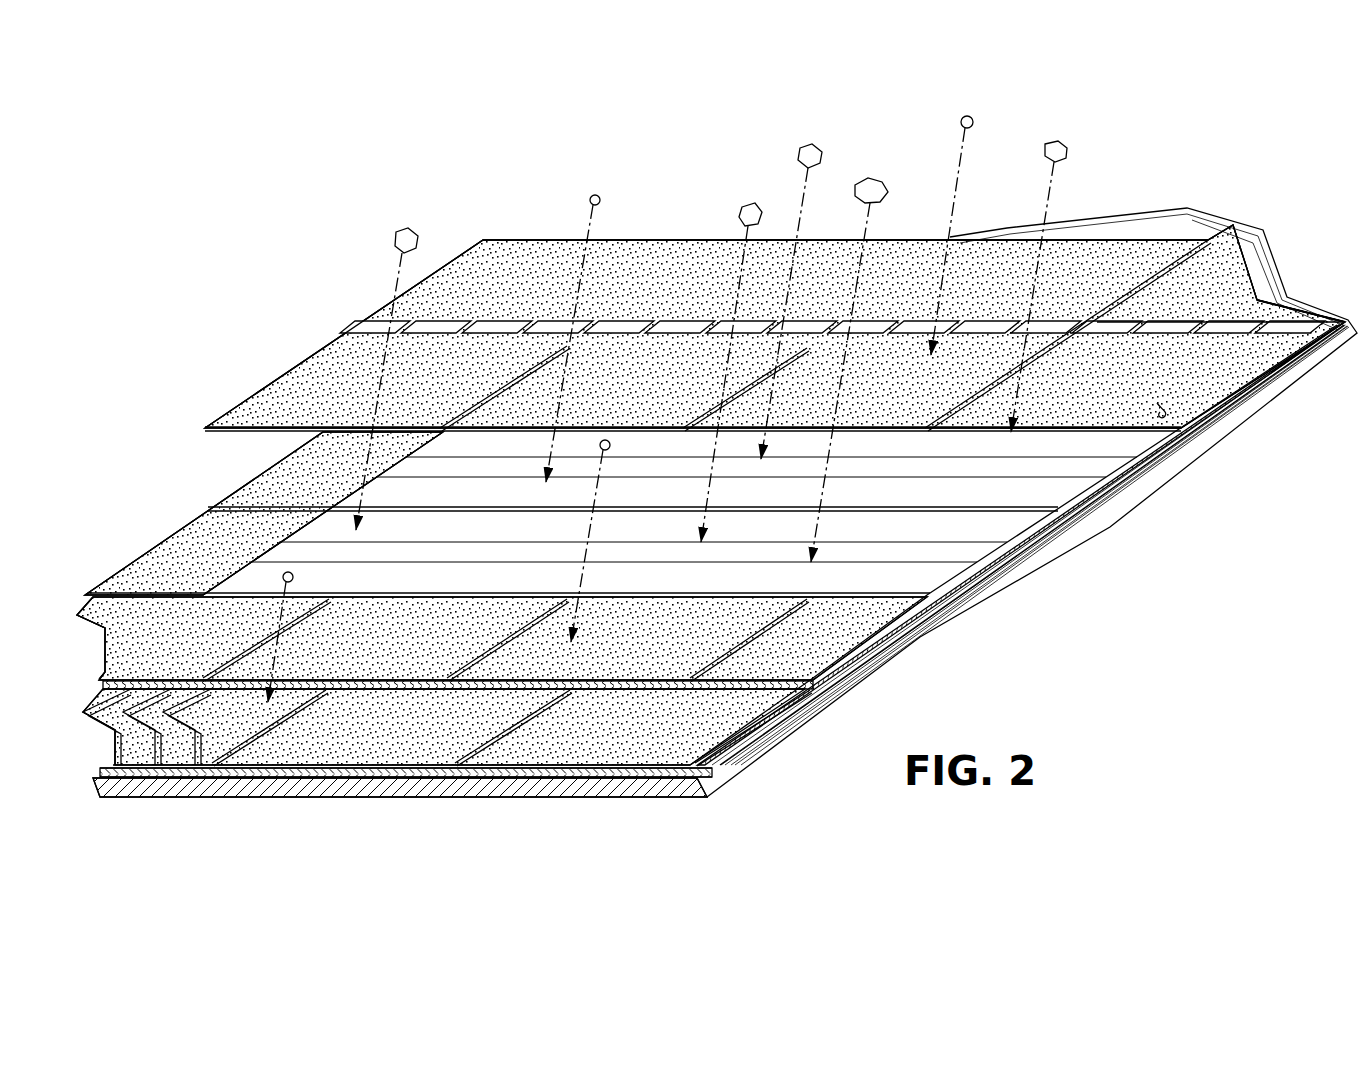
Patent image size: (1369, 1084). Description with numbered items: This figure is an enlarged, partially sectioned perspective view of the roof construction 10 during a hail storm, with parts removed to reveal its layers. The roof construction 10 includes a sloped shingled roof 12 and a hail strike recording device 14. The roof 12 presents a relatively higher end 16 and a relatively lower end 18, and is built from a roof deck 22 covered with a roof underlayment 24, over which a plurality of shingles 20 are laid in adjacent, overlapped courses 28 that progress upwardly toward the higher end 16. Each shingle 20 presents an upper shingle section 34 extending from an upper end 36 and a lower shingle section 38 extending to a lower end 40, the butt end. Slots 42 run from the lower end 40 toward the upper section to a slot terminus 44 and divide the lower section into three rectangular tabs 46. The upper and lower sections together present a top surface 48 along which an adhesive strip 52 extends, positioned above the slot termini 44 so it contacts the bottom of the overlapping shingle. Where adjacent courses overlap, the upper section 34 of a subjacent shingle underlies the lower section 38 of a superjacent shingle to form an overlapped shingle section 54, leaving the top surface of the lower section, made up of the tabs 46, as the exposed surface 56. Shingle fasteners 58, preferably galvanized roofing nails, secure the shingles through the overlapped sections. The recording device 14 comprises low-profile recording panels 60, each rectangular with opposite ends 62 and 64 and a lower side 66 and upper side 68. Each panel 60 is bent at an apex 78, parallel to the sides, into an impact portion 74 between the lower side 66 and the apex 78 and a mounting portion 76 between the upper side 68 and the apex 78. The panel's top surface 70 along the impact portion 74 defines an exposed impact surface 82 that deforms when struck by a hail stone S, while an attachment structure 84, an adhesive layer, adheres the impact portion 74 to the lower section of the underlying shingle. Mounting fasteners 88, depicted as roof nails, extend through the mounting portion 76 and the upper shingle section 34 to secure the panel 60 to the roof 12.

The roof construction 10 is at (220, 229).
The sloped shingled roof 12 is at (206, 320).
The hail strike recording device 14 is at (348, 480).
The higher end 16 is at (1164, 168).
The lower end 18 is at (163, 829).
The shingles 20 is at (500, 247).
The roof deck 22 is at (1200, 216).
The roof underlayment 24 is at (1218, 265).
The courses 28 is at (146, 538).
The upper shingle section 34 is at (1270, 330).
The upper end 36 is at (690, 238).
The lower shingle section 38 is at (257, 403).
The lower end 40 is at (240, 432).
The slots 42 is at (481, 768).
The slot terminus 44 is at (563, 346).
The rectangular tabs 46 is at (308, 768).
The top surface 48 is at (627, 248).
The adhesive strip 52 is at (423, 327).
The overlapped shingle section 54 is at (1300, 327).
The exposed surface 56 is at (402, 768).
The shingle fasteners 58 is at (353, 337).
The hail strike recording panels 60 is at (286, 513).
The end 62 is at (228, 575).
The end 64 is at (1083, 477).
The lower side 66 is at (1157, 403).
The upper side 68 is at (905, 597).
The top surface 70 is at (350, 483).
The impact portion 74 is at (1032, 545).
The mounting portion 76 is at (1113, 413).
The apex 78 is at (1072, 430).
The exposed impact surface 82 is at (1105, 561).
The attachment structure 84 is at (925, 602).
The mounting fasteners 88 is at (1160, 407).
The hail stone S is at (402, 230).